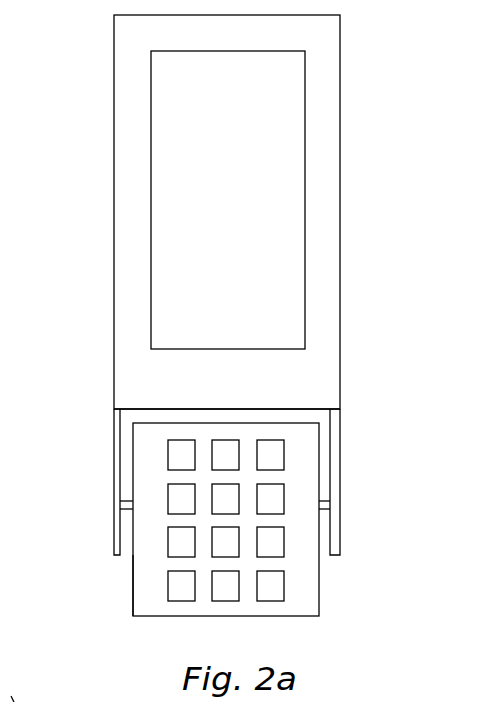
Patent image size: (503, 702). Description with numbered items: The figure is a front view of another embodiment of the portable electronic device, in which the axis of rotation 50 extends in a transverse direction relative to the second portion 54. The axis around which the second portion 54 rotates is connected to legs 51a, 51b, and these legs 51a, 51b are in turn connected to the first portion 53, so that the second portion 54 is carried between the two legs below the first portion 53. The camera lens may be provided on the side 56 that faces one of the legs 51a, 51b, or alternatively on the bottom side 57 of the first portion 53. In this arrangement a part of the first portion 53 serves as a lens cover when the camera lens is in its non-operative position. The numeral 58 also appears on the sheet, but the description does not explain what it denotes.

The upper housing with display 53 is at (325, 285).
The lower edge of upper housing 57 is at (320, 412).
The right guide rail 51a is at (333, 470).
The left guide rail 51b is at (113, 472).
The guide cross member 50 is at (323, 508).
The keypad 54 is at (303, 597).
The keypad housing side 56 is at (133, 565).
The element 58 is at (12, 688).